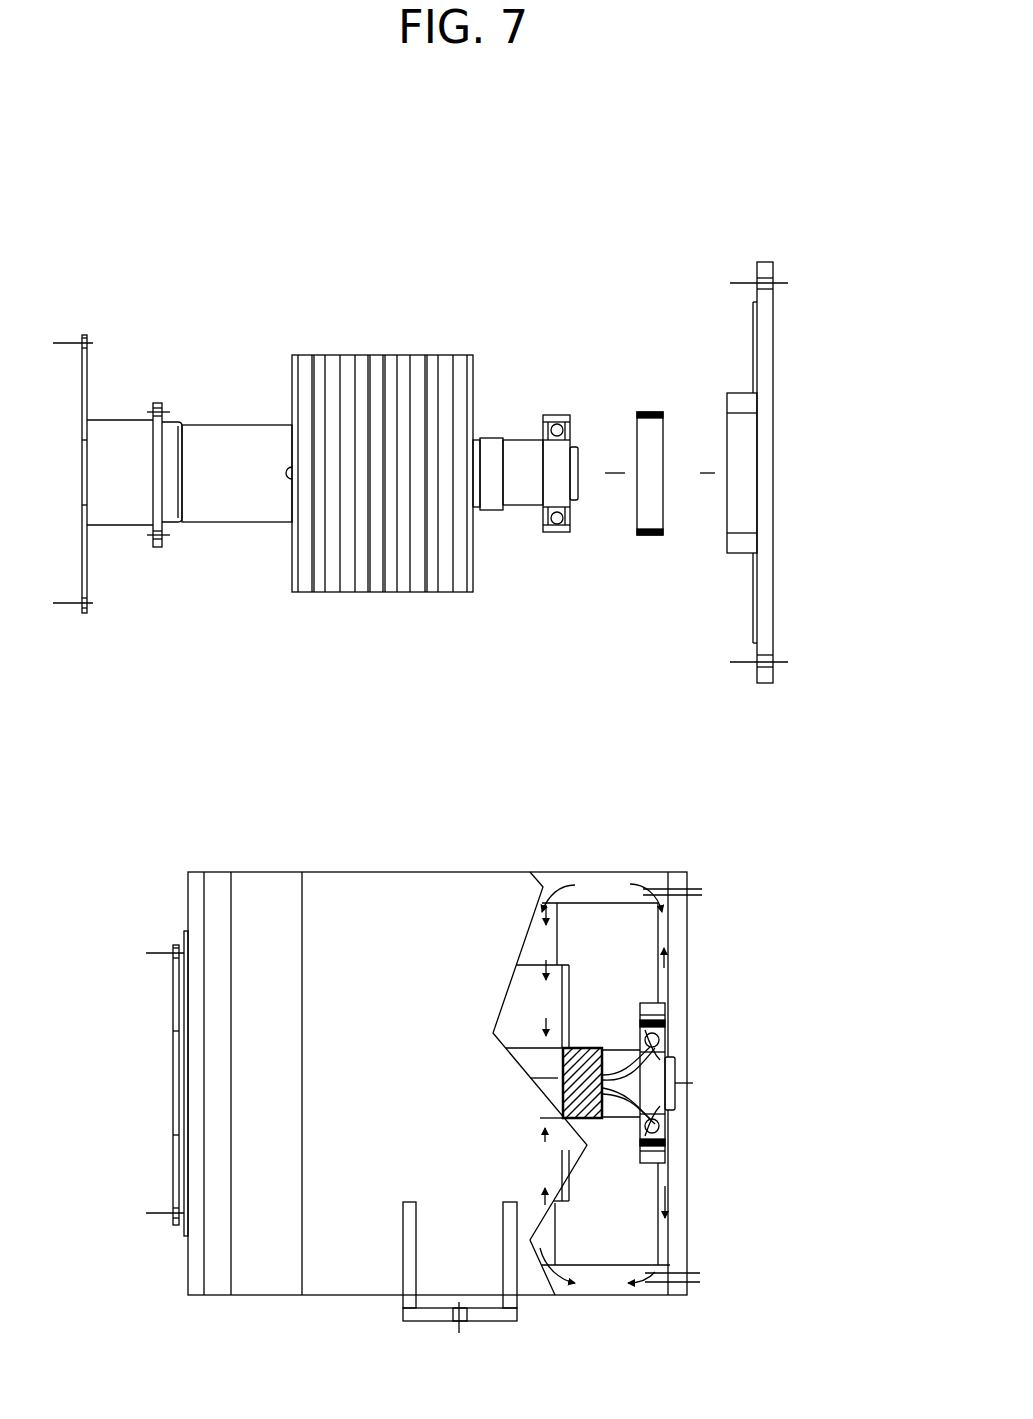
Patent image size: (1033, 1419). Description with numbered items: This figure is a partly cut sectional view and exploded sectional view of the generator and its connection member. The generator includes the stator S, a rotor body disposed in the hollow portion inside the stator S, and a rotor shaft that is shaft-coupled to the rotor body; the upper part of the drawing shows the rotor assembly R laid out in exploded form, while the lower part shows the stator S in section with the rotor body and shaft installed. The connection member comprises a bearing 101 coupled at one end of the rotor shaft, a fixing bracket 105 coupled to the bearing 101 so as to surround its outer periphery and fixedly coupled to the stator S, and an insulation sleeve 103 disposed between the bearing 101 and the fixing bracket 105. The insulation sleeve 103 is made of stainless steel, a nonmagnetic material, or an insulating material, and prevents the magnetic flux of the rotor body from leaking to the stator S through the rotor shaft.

The rotor assembly R is at (381, 302).
The stator S is at (404, 897).
The bearing 101 is at (565, 420).
The insulation sleeve 103 is at (647, 422).
The fixing bracket 105 is at (768, 318).